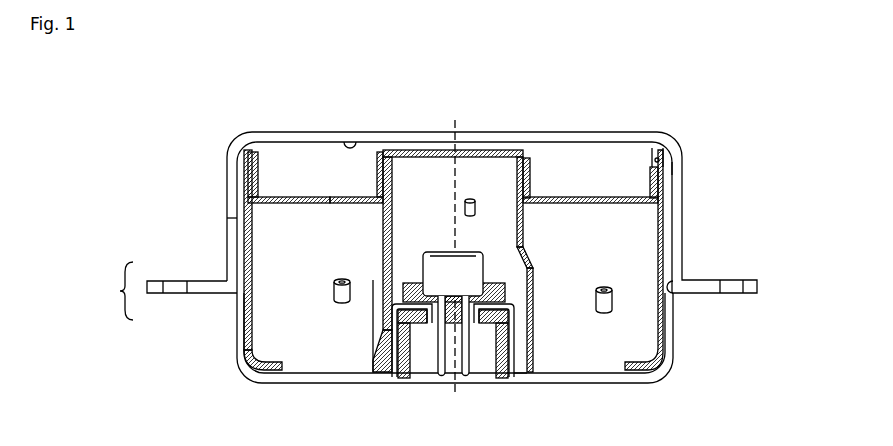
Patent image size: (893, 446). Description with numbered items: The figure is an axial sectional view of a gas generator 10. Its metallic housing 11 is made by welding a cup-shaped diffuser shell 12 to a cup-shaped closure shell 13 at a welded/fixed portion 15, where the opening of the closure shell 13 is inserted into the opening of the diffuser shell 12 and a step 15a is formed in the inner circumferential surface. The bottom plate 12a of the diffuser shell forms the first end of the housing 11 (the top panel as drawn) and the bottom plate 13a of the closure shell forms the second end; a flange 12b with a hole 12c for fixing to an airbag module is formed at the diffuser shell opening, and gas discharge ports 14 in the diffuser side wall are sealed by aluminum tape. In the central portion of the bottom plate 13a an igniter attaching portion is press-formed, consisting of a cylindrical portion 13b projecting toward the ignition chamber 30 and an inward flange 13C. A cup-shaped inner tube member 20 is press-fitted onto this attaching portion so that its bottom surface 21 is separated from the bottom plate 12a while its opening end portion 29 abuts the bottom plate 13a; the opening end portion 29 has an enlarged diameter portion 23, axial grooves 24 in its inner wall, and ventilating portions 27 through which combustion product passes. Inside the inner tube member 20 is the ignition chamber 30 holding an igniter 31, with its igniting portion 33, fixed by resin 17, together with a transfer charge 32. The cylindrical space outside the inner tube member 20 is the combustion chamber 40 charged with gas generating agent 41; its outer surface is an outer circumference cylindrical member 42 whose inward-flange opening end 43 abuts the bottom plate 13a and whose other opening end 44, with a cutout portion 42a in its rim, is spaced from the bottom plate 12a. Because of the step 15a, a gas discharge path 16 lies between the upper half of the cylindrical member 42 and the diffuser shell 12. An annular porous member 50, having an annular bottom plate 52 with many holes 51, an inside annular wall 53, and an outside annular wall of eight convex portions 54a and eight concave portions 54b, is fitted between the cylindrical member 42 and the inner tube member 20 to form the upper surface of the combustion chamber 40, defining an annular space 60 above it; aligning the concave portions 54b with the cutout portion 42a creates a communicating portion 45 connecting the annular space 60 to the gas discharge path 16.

The gas generator 10 is at (525, 132).
The housing 11 is at (115, 291).
The diffuser shell 12 is at (225, 265).
The bottom plate of the diffuser shell 12a is at (352, 140).
The flange 12b is at (742, 280).
The hole 12c is at (740, 293).
The closure shell 13 is at (237, 303).
The bottom plate of the closure shell 13a is at (310, 378).
The cylindrical portion 13b is at (510, 378).
The inward flange 13C is at (473, 380).
The gas discharge ports 14 is at (225, 218).
The welded/fixed portion 15 is at (676, 296).
The step 15a is at (683, 243).
The gas discharge path 16 is at (686, 150).
The resin 17 is at (428, 335).
The inner tube member 20 is at (527, 250).
The bottom surface of the inner tube member 21 is at (413, 150).
The enlarged diameter portion 23 is at (534, 330).
The grooves 24 is at (534, 295).
The ventilating portions 27 is at (371, 352).
The opening end portion of the inner tube member 29 is at (528, 360).
The ignition chamber 30 is at (410, 195).
The igniter 31 is at (465, 265).
The transfer charge 32 is at (474, 198).
The igniting portion 33 is at (447, 252).
The combustion chamber 40 is at (587, 352).
The gas generating agent 41 is at (606, 286).
The outer circumference cylindrical member 42 is at (251, 312).
The cutout portion 42a is at (672, 137).
The opening end 43 is at (273, 362).
The opening end 44 is at (247, 134).
The communicating portion 45 is at (655, 150).
The annular porous member 50 is at (296, 204).
The holes 51 is at (590, 204).
The annular bottom plate 52 is at (336, 204).
The inside annular wall 53 is at (531, 177).
The convex portions 54a is at (258, 175).
The concave portions 54b is at (652, 172).
The annular space 60 is at (315, 190).